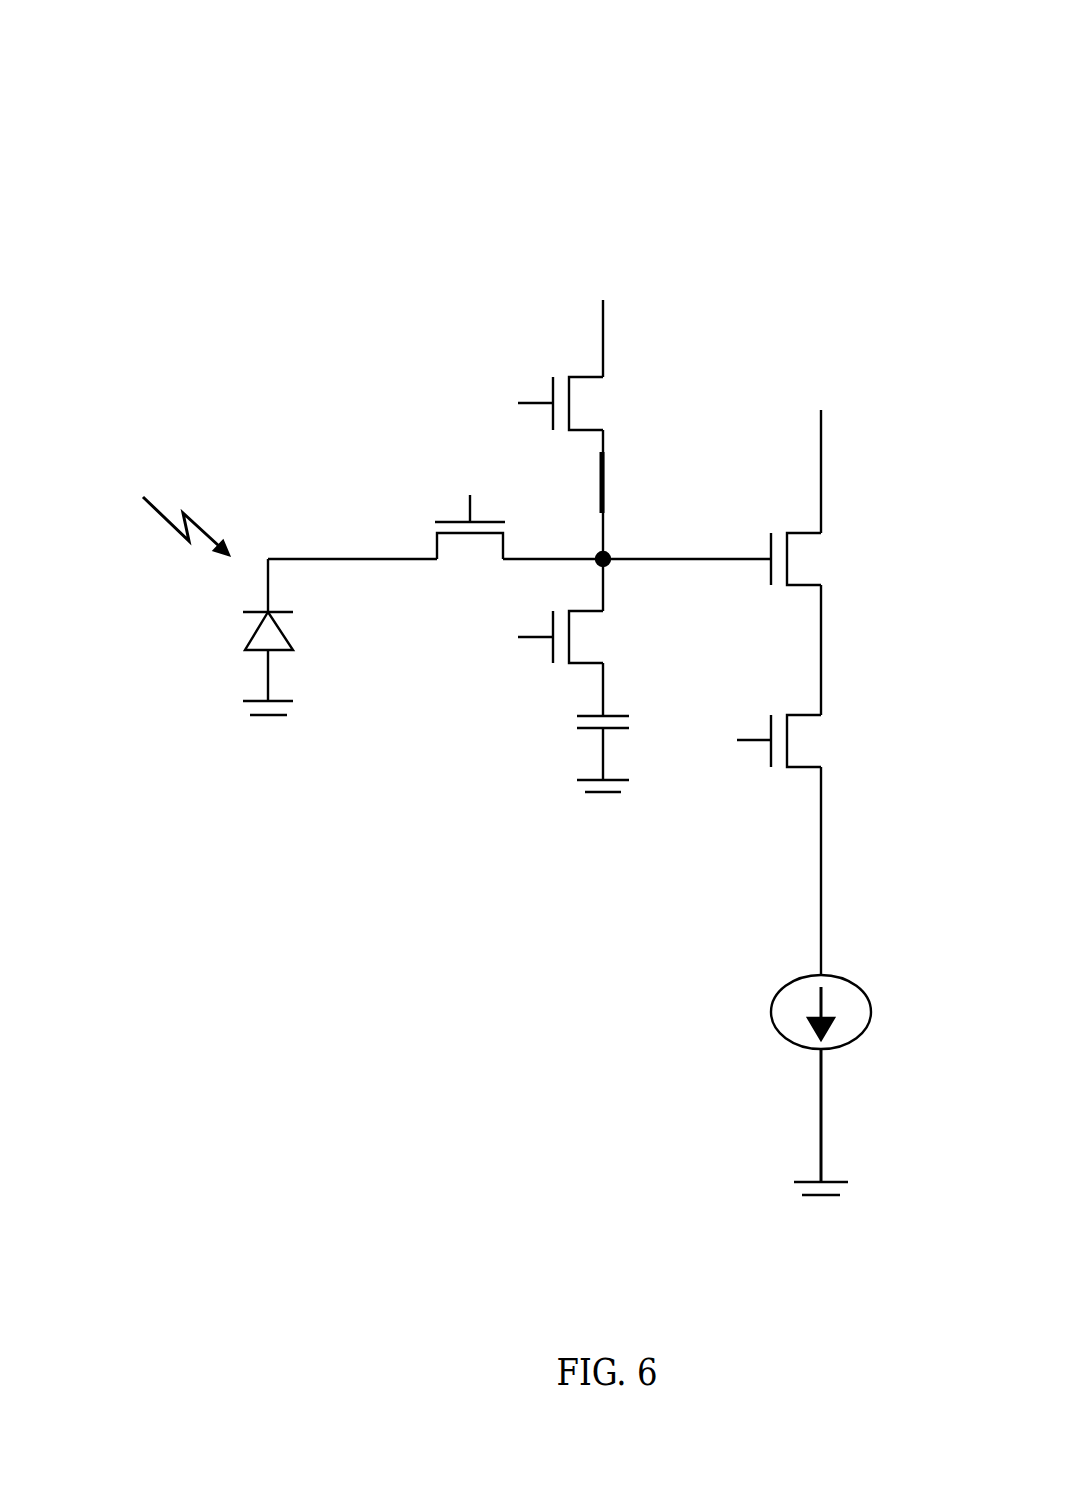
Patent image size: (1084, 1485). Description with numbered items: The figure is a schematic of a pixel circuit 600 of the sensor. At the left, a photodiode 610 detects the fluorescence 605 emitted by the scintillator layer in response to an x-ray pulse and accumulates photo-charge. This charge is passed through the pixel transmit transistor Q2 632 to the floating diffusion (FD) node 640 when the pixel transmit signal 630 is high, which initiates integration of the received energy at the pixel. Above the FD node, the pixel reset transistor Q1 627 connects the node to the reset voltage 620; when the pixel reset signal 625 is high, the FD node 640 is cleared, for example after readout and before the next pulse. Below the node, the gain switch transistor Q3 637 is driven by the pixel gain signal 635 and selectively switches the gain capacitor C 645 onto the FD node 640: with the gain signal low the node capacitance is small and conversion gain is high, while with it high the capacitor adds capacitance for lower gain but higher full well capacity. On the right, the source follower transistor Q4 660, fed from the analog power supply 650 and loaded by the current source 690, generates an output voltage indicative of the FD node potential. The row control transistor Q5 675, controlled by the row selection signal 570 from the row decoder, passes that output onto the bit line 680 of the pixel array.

The pixel circuit 600 is at (501, 604).
The fluorescence 605 is at (166, 493).
The photodiode 610 is at (233, 637).
The reset voltage 620 is at (606, 308).
The pixel reset signal 625 is at (486, 392).
The pixel reset transistor Q1 627 is at (602, 403).
The pixel transmit signal 630 is at (446, 481).
The pixel transmit transistor Q2 632 is at (435, 554).
The pixel gain signal 635 is at (501, 641).
The gain switch transistor Q3 637 is at (594, 637).
The floating diffusion node 640 is at (628, 520).
The gain capacitor C 645 is at (570, 727).
The analog power supply 650 is at (838, 433).
The source follower transistor Q4 660 is at (744, 624).
The row selection signal 570 is at (735, 768).
The row control transistor Q5 675 is at (825, 741).
The bit line 680 is at (775, 871).
The current source 690 is at (774, 1085).